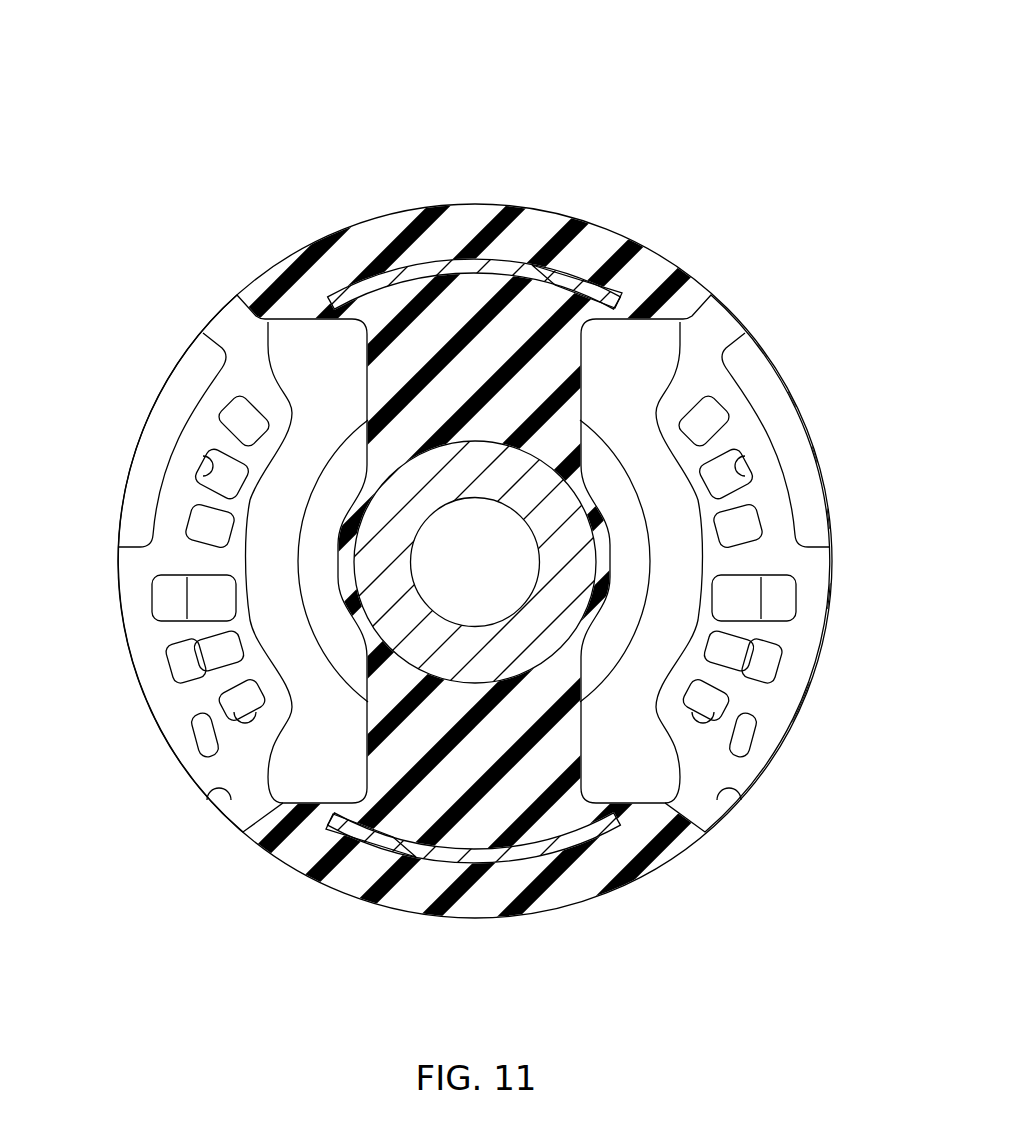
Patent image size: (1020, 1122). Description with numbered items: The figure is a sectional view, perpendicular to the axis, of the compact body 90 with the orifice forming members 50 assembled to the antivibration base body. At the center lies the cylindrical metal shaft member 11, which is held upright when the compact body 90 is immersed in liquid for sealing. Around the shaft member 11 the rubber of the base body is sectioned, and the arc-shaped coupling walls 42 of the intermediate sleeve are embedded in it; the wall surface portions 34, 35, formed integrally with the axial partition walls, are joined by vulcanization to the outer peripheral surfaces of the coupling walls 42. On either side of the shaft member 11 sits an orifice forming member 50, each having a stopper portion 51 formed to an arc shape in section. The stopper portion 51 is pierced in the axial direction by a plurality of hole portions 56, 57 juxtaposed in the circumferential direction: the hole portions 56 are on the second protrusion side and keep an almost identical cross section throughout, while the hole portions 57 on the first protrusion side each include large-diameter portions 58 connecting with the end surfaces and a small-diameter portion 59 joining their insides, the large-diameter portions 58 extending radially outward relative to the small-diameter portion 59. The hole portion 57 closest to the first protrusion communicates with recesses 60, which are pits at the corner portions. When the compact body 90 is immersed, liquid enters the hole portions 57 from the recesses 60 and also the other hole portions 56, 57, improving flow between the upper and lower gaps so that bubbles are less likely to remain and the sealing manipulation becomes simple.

The compact body 90 is at (798, 106).
The wall surface portion 34 is at (463, 216).
The wall surface portion 35 is at (410, 894).
The coupling wall 42 is at (487, 858).
The shaft member 11 is at (505, 622).
The orifice forming member 50 is at (205, 292).
The stopper portion 51 is at (137, 600).
The hole portion 56 is at (205, 465).
The hole portion 57 is at (172, 658).
The large-diameter portion 58 is at (205, 758).
The small-diameter portion 59 is at (232, 714).
The recess 60 is at (218, 800).